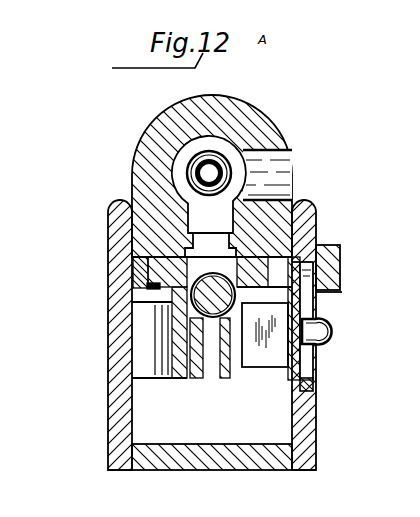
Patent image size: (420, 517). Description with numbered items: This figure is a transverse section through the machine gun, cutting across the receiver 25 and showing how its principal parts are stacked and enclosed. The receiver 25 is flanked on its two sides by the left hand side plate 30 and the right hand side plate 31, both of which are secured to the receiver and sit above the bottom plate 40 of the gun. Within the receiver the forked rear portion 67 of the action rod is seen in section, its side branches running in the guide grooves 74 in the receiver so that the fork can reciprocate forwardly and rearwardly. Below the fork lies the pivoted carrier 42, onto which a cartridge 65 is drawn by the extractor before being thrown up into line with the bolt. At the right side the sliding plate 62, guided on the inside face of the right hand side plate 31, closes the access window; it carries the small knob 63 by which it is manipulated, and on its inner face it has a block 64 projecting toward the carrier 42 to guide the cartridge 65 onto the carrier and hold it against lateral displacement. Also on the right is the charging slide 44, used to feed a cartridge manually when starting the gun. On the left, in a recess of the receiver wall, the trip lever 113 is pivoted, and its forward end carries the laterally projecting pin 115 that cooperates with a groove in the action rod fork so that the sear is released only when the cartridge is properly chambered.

The receiver 25 is at (274, 123).
The left hand side plate 30 is at (110, 420).
The right hand side plate 31 is at (318, 428).
The bottom plate 40 is at (202, 464).
The carrier 42 is at (197, 380).
The charging slide 44 is at (341, 257).
The sliding plate 62 is at (299, 383).
The knob 63 is at (340, 339).
The block 64 is at (263, 350).
The cartridge 65 is at (185, 318).
The forked rear portion 67 is at (309, 240).
The guide grooves 74 is at (326, 293).
The trip lever 113 is at (140, 277).
The pin 115 is at (155, 308).